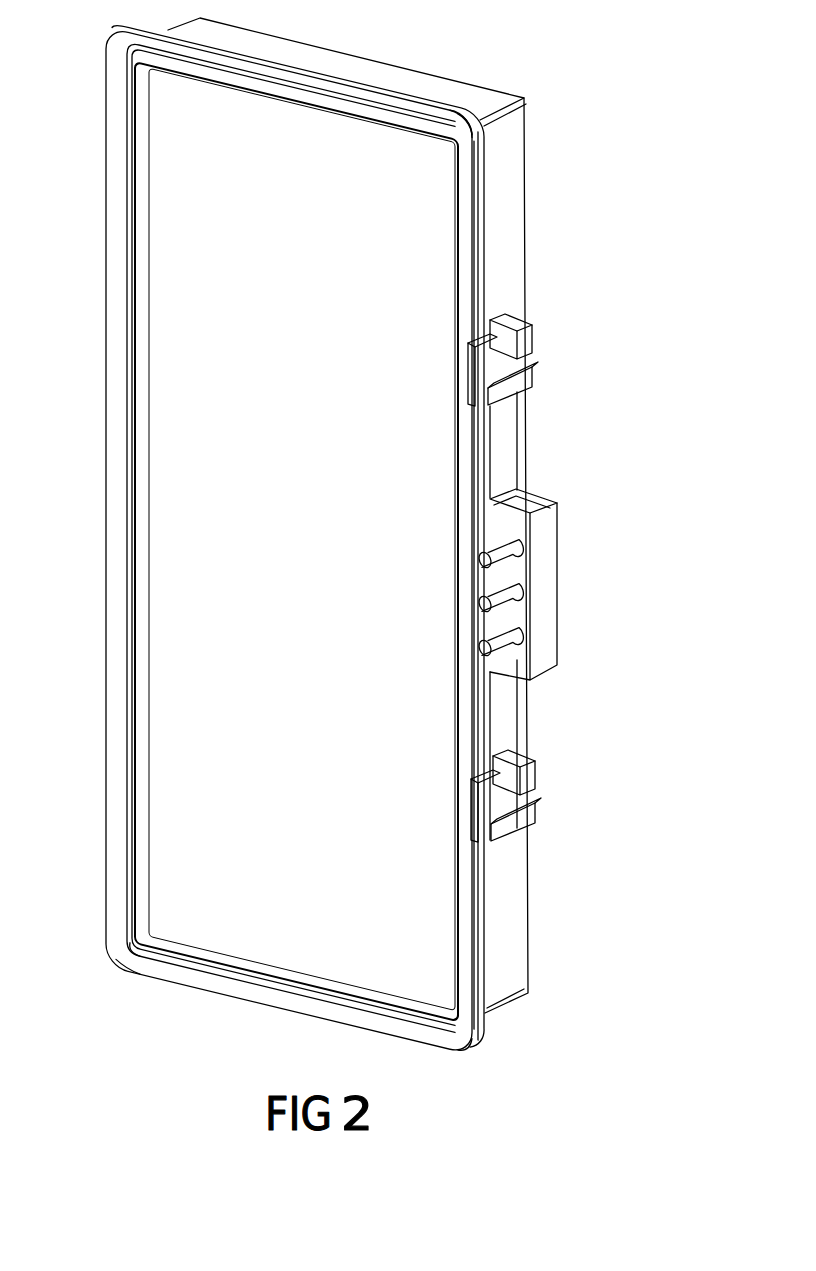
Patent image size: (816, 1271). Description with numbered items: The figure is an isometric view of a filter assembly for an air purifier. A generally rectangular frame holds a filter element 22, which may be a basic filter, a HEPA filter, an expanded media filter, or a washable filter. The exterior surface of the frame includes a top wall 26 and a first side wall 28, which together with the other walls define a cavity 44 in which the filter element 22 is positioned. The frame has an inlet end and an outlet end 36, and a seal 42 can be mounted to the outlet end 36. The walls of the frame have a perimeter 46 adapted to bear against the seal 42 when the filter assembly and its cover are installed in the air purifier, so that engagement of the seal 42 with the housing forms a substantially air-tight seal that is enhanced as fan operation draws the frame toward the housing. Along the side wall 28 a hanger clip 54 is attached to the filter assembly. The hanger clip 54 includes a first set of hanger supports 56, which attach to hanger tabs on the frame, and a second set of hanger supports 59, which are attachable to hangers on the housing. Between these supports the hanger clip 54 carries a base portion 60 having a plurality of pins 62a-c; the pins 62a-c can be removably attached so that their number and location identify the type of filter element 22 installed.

The filter element 22 is at (168, 712).
The top wall 26 is at (437, 84).
The first side wall 28 is at (512, 236).
The outlet end 36 is at (138, 258).
The seal 42 is at (478, 128).
The cavity 44 is at (128, 938).
The perimeter 46 is at (124, 537).
The hanger clip 54 is at (507, 437).
The first set of hanger supports 56 is at (503, 322).
The second set of hanger supports 59 is at (530, 808).
The base portion 60 is at (548, 630).
The pins 62a-c is at (535, 570).